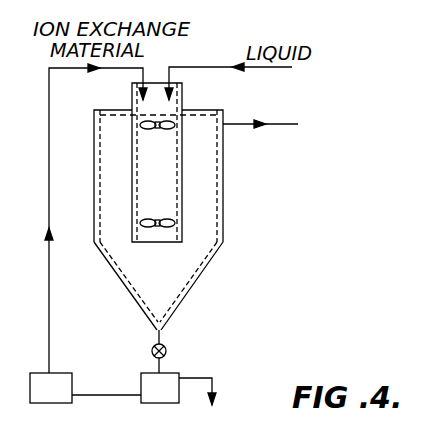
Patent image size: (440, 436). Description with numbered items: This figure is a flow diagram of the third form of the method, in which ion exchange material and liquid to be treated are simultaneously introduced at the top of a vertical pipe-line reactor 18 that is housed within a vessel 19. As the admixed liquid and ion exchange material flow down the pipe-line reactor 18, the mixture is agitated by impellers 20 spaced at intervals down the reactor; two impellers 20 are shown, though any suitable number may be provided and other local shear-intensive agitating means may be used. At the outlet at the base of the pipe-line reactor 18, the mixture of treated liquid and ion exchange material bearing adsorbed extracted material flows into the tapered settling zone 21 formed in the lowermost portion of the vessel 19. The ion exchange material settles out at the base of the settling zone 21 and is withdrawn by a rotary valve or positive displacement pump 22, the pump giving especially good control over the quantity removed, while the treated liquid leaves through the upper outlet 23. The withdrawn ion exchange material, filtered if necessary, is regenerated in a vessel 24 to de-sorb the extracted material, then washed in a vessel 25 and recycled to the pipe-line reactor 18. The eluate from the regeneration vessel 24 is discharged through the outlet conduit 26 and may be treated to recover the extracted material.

The vertical pipe-line reactor 18 is at (182, 90).
The vessel 19 is at (223, 219).
The impellers 20 is at (146, 130).
The tapered settling zone 21 is at (188, 300).
The rotary valve or positive displacement pump 22 is at (166, 351).
The upper outlet 23 is at (229, 125).
The regeneration vessel 24 is at (157, 403).
The washing vessel 25 is at (53, 403).
The outlet conduit 26 is at (216, 378).